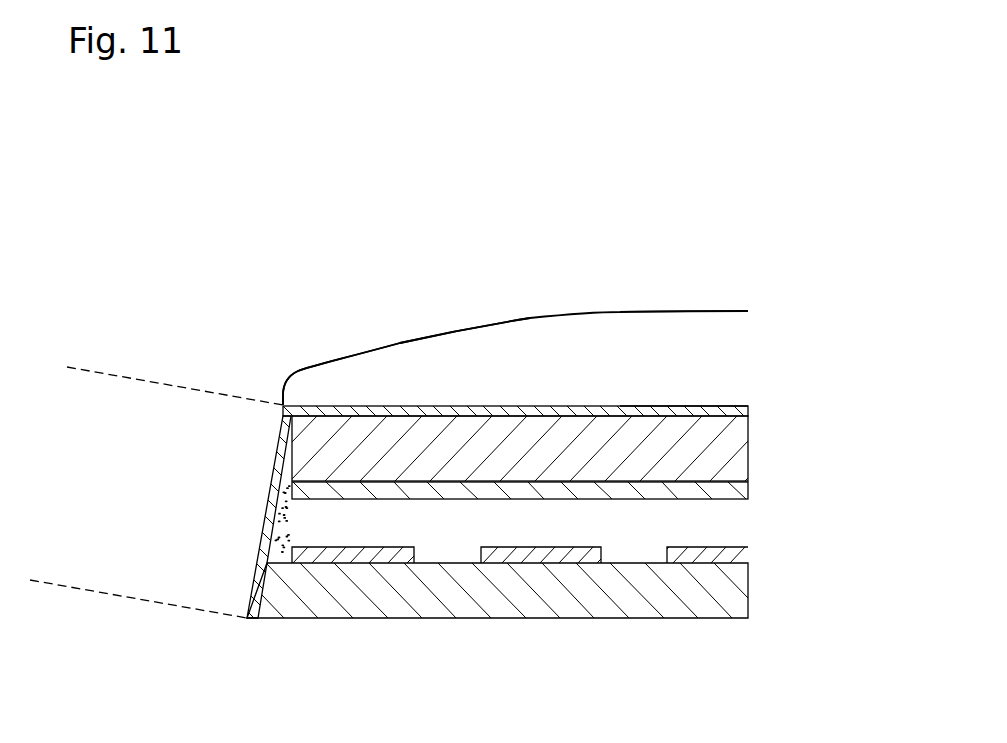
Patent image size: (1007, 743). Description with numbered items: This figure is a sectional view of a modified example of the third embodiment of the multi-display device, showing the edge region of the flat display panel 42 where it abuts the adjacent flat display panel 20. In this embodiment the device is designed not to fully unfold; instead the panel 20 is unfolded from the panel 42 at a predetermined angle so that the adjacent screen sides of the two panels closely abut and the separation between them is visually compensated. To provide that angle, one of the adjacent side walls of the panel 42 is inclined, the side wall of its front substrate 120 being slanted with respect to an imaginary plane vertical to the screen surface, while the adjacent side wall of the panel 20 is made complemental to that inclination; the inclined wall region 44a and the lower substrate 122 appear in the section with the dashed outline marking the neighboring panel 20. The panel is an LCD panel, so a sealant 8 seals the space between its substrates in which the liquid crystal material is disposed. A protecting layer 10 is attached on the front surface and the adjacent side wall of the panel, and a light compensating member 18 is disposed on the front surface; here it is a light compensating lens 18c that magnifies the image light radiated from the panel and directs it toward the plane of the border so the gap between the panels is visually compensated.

The flat display panel 20 is at (150, 357).
The sealant 8 is at (285, 518).
The protecting layer 10 is at (470, 408).
The light compensating member 18 is at (608, 305).
The light compensating lens 18c is at (530, 318).
The flat display panel 42 is at (772, 373).
The front substrate 120 is at (708, 447).
The second substrate 122 is at (536, 605).
The side wall 44a is at (272, 578).